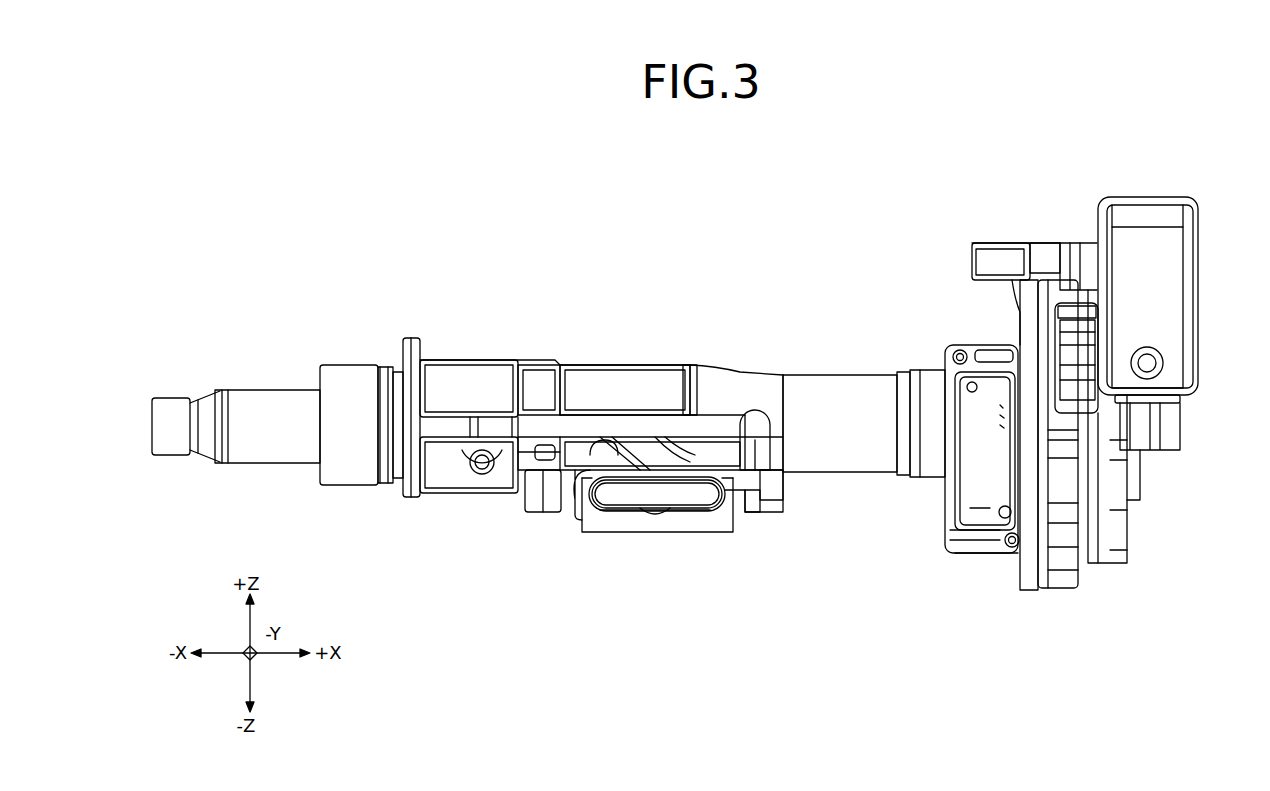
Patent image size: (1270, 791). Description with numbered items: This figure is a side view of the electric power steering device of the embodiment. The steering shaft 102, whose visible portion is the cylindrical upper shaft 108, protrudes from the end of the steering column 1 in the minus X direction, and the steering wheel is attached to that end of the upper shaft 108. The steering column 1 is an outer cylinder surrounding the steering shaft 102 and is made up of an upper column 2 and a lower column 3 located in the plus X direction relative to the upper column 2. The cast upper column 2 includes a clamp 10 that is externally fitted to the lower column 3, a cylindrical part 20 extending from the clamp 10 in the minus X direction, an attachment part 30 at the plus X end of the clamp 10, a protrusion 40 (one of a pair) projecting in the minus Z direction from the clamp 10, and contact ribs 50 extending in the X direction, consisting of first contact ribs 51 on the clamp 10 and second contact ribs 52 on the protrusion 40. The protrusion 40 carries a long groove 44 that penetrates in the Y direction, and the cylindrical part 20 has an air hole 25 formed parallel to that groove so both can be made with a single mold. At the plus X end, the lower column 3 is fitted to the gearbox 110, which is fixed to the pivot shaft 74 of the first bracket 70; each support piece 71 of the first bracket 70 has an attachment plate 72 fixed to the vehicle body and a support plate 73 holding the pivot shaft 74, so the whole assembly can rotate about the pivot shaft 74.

The steering column 1 is at (730, 312).
The upper column 2 is at (540, 312).
The lower column 3 is at (838, 345).
The clamp 10 is at (622, 387).
The cylindrical part 20 is at (466, 382).
The air hole 25 is at (480, 472).
The attachment part 30 is at (763, 387).
The protrusion 40 is at (658, 540).
The long groove 44 is at (633, 512).
The contact rib 50 is at (677, 454).
The first contact rib 51 is at (678, 398).
The second contact rib 52 is at (715, 515).
The first bracket 70 is at (1076, 367).
The support piece 71 is at (1122, 192).
The attachment plate 72 is at (1178, 199).
The support plate 73 is at (1162, 280).
The pivot shaft 74 is at (1165, 360).
The steering shaft 102 is at (277, 410).
The upper shaft 108 is at (250, 408).
The gearbox 110 is at (968, 300).